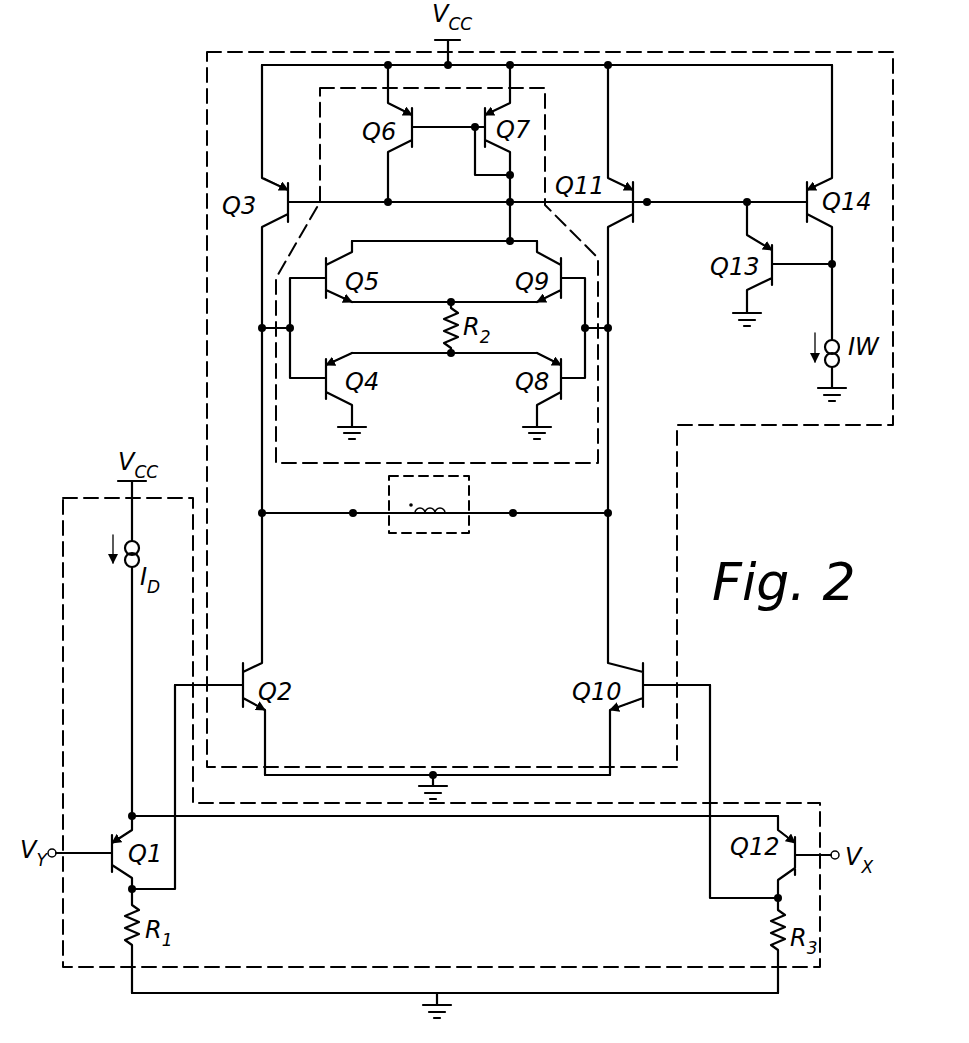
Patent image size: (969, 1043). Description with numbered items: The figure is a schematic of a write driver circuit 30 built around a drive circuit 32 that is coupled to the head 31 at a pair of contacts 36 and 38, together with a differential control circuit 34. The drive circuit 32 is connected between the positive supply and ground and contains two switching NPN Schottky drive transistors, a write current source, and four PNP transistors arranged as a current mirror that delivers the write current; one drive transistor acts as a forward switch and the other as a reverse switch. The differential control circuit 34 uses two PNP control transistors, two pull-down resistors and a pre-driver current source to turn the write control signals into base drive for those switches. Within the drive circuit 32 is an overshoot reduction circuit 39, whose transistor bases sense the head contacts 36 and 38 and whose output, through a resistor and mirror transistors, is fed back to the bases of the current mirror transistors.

The write driver circuit 30 is at (170, 138).
The head 31 is at (411, 535).
The drive circuit 32 is at (207, 250).
The differential control circuit 34 is at (92, 498).
The contact 36 is at (353, 516).
The contact 38 is at (513, 516).
The overshoot reduction circuit 39 is at (320, 88).